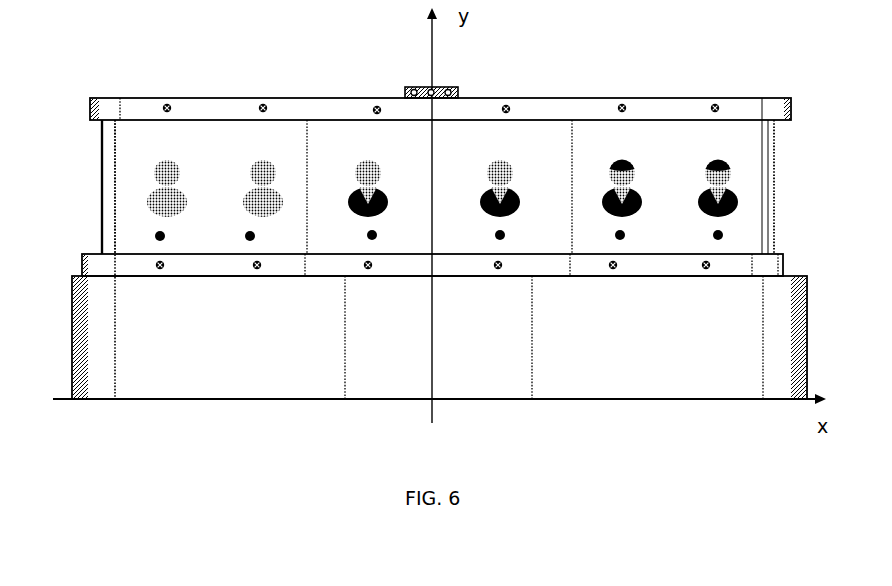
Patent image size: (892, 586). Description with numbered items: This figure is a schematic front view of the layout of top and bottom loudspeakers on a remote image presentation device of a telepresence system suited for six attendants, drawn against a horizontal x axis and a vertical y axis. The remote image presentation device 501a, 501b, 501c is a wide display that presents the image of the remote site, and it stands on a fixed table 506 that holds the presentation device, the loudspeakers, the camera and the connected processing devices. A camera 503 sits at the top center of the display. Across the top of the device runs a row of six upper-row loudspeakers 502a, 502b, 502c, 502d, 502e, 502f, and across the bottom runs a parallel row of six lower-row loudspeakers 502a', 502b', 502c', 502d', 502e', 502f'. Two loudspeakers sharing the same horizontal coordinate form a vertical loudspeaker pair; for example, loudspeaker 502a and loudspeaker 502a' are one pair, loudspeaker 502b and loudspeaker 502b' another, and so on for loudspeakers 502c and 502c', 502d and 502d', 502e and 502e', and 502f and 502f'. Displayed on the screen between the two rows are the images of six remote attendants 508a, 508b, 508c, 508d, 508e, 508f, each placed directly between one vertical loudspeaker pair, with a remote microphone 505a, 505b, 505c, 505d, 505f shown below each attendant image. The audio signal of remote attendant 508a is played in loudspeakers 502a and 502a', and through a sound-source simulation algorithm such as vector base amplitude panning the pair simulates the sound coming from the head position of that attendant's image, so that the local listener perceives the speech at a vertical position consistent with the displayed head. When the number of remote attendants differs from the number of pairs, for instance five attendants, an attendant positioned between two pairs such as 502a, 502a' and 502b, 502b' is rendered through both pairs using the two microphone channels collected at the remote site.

The remote image presentation device 501a is at (125, 173).
The remote image presentation device 501b is at (340, 156).
The remote image presentation device 501c is at (580, 156).
The upper-row loudspeaker 502a is at (176, 85).
The upper-row loudspeaker 502b is at (274, 85).
The upper-row loudspeaker 502c is at (385, 86).
The upper-row loudspeaker 502d is at (506, 85).
The upper-row loudspeaker 502e is at (626, 85).
The upper-row loudspeaker 502f is at (722, 85).
The lower-row loudspeaker 502a' is at (164, 294).
The lower-row loudspeaker 502b' is at (264, 294).
The lower-row loudspeaker 502c' is at (386, 295).
The lower-row loudspeaker 502d' is at (495, 296).
The lower-row loudspeaker 502e' is at (615, 294).
The lower-row loudspeaker 502f' is at (706, 296).
The camera 503 is at (450, 89).
The remote microphone 505a is at (166, 237).
The remote microphone 505b is at (256, 237).
The remote microphone 505c is at (378, 236).
The remote microphone 505d is at (505, 237).
The remote microphone 505f is at (723, 237).
The fixed table 506 is at (82, 258).
The attendant at the remote site 508a is at (173, 178).
The attendant at the remote site 508b is at (271, 178).
The attendant at the remote site 508c is at (377, 178).
The attendant at the remote site 508d is at (505, 178).
The attendant at the remote site 508e is at (628, 178).
The attendant at the remote site 508f is at (721, 178).